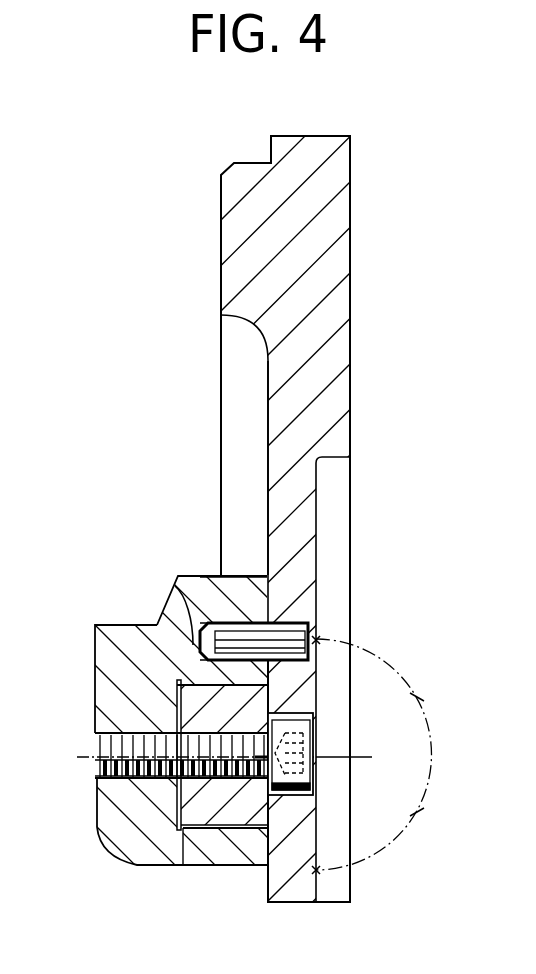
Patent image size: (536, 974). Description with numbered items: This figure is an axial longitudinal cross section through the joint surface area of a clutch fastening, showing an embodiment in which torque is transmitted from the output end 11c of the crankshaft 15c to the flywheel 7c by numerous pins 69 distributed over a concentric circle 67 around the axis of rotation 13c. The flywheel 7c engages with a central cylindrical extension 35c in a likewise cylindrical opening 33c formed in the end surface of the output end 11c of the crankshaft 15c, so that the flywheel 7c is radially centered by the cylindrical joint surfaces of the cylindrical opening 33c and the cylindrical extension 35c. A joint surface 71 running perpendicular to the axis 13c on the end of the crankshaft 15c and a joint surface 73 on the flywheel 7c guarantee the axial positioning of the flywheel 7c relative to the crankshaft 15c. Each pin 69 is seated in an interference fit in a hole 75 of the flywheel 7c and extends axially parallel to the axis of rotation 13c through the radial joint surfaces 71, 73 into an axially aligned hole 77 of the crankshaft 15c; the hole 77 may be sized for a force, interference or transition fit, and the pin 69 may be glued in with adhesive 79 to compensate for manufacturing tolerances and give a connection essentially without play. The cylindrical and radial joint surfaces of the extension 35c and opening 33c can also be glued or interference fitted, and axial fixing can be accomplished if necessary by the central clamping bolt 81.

The flywheel 7c is at (328, 265).
The joint surface on the flywheel 73 is at (267, 482).
The joint surface 71 is at (297, 612).
The hole 77 is at (246, 611).
The output end of the crankshaft 11c is at (187, 598).
The hole 75 is at (294, 622).
The adhesive 79 is at (163, 599).
The crankshaft 15c is at (94, 658).
The concentric circle 67 is at (365, 643).
The pin 69 is at (303, 654).
The axis of rotation 13c is at (87, 758).
The central clamping bolt 81 is at (310, 770).
The cylindrical opening 33c is at (196, 832).
The cylindrical extension 35c is at (223, 800).